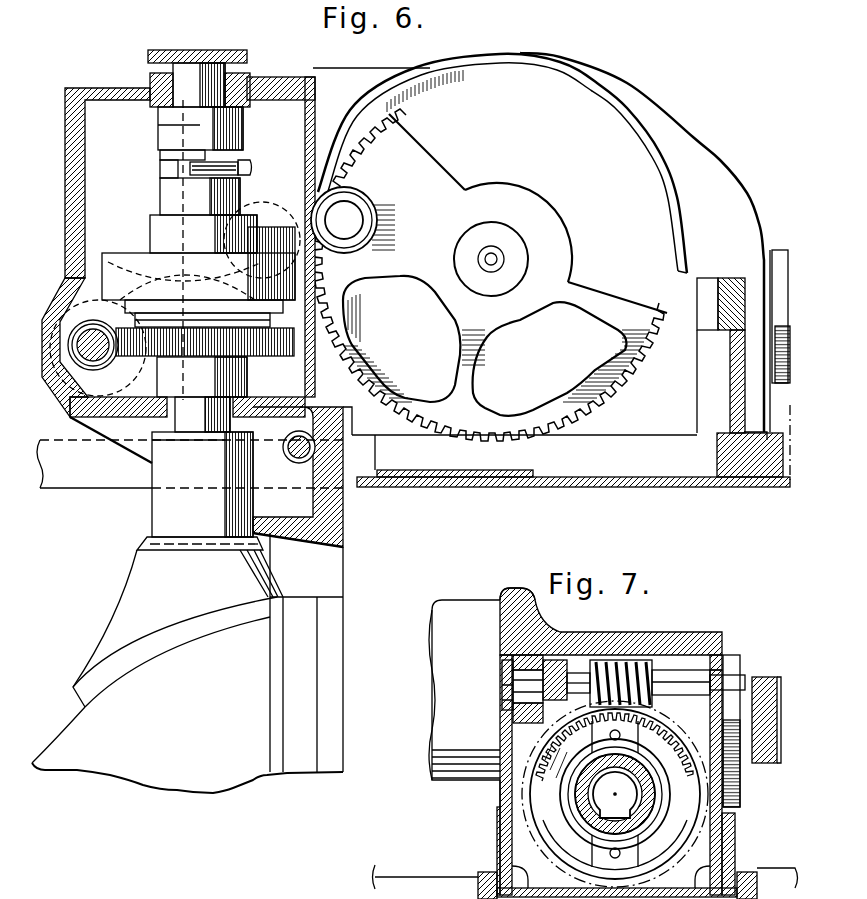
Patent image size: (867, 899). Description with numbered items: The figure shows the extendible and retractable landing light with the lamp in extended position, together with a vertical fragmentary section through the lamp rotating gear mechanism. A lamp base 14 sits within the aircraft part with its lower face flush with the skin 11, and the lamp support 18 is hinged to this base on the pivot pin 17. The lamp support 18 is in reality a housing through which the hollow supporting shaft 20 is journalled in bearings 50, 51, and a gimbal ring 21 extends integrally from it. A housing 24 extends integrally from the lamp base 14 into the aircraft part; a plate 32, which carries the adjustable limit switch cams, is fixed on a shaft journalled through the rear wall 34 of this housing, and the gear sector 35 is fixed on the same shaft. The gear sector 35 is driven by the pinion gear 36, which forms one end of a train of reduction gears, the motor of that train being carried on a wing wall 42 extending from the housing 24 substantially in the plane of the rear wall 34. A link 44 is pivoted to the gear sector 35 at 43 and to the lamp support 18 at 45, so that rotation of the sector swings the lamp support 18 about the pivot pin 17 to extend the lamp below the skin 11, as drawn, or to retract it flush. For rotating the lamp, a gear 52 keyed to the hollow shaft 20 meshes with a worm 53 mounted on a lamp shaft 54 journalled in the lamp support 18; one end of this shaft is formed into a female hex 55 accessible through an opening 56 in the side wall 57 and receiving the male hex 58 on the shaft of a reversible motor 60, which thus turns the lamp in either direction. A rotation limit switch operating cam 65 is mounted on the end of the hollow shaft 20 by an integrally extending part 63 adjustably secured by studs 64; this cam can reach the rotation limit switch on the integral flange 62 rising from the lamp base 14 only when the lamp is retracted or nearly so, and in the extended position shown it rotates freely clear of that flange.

In FIG. 6, the skin 11 is at (573, 476).
In FIG. 6, the lamp base 14 is at (62, 482).
In FIG. 7, the lamp base 14 is at (375, 877).
In FIG. 6, the pivot pin 17 is at (300, 465).
In FIG. 6, the lamp support 18 is at (66, 92).
In FIG. 7, the lamp support 18 is at (702, 640).
In FIG. 6, the hollow supporting shaft 20 is at (188, 420).
In FIG. 7, the hollow supporting shaft 20 is at (640, 806).
In FIG. 6, the gimbal ring 21 is at (333, 583).
In FIG. 6, the housing 24 is at (694, 163).
In FIG. 6, the plate 32 is at (497, 253).
In FIG. 6, the rear wall 34 is at (598, 86).
In FIG. 6, the gear sector 35 is at (408, 150).
In FIG. 6, the pinion gear 36 is at (270, 210).
In FIG. 6, the wing wall 42 is at (325, 80).
In FIG. 6, the pivot 43 is at (355, 216).
In FIG. 6, the link 44 is at (328, 262).
In FIG. 7, the link 44 is at (765, 678).
In FIG. 6, the pivot 45 is at (66, 296).
In FIG. 7, the pivot 45 is at (748, 765).
In FIG. 6, the bearing 50 is at (160, 398).
In FIG. 6, the bearing 51 is at (168, 88).
In FIG. 6, the gear 52 is at (273, 354).
In FIG. 7, the gear 52 is at (530, 793).
In FIG. 6, the worm 53 is at (92, 357).
In FIG. 7, the worm 53 is at (637, 660).
In FIG. 6, the lamp shaft 54 is at (66, 412).
In FIG. 7, the lamp shaft 54 is at (576, 672).
In FIG. 7, the female hex 55 is at (545, 670).
In FIG. 7, the opening 56 is at (493, 660).
In FIG. 7, the side wall 57 is at (501, 782).
In FIG. 7, the male hex 58 is at (501, 688).
In FIG. 7, the motor 60 is at (430, 672).
In FIG. 6, the integral flange 62 is at (735, 278).
In FIG. 6, the integrally extending part 63 is at (168, 128).
In FIG. 6, the studs 64 is at (252, 168).
In FIG. 6, the rotation limit switch operating cam 65 is at (233, 55).